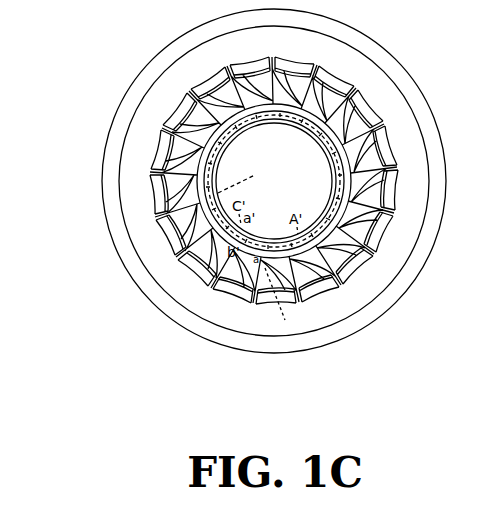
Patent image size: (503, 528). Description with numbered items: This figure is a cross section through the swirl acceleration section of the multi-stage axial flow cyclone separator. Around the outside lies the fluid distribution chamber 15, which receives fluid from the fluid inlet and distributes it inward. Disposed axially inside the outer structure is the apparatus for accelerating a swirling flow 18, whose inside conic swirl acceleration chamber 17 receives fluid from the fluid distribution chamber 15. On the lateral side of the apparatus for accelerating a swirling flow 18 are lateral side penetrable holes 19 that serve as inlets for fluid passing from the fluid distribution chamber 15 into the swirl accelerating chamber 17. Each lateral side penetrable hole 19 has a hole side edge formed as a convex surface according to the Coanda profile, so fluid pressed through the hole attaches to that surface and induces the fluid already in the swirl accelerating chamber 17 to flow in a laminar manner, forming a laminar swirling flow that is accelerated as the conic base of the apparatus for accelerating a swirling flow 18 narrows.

The fluid distribution chamber 15 is at (163, 262).
The swirl accelerating chamber 17 is at (213, 195).
The apparatus for accelerating a swirling flow 18 is at (205, 283).
The lateral side penetrable hole 19 is at (255, 283).